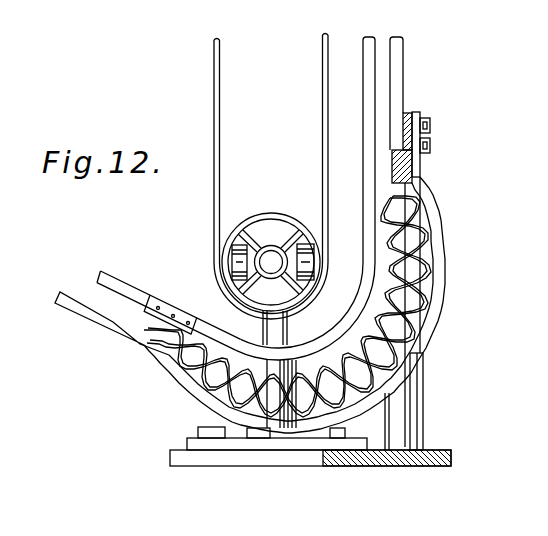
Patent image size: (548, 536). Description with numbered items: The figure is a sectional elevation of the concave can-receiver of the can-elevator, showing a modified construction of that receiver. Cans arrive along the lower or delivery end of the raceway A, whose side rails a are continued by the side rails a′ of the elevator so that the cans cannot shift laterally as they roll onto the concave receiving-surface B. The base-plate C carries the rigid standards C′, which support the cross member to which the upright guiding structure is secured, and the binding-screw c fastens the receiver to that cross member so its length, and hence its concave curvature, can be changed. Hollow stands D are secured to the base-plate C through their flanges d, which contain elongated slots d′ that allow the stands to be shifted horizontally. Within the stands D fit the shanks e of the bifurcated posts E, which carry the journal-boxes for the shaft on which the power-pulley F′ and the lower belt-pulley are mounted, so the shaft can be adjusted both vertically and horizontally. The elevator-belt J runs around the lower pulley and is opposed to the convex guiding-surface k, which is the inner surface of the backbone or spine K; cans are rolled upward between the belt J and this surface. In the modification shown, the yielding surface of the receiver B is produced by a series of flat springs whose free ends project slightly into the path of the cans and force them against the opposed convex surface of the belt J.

The raceway A is at (111, 306).
The side rails a is at (169, 308).
The side rails a′ is at (300, 311).
The concave receiving-surface B is at (97, 393).
The base-plate C is at (310, 472).
The rigid standards C′ is at (428, 313).
The binding-screw c is at (434, 239).
The hollow stands D is at (265, 394).
The flanges d is at (186, 450).
The elongated slots d′ is at (360, 150).
The bifurcated posts E is at (300, 394).
The shanks e is at (282, 328).
The power-pulley F′ is at (271, 262).
The elevator-belt J is at (250, 150).
The backbone or spine K is at (433, 85).
The convex guiding-surface k is at (391, 93).